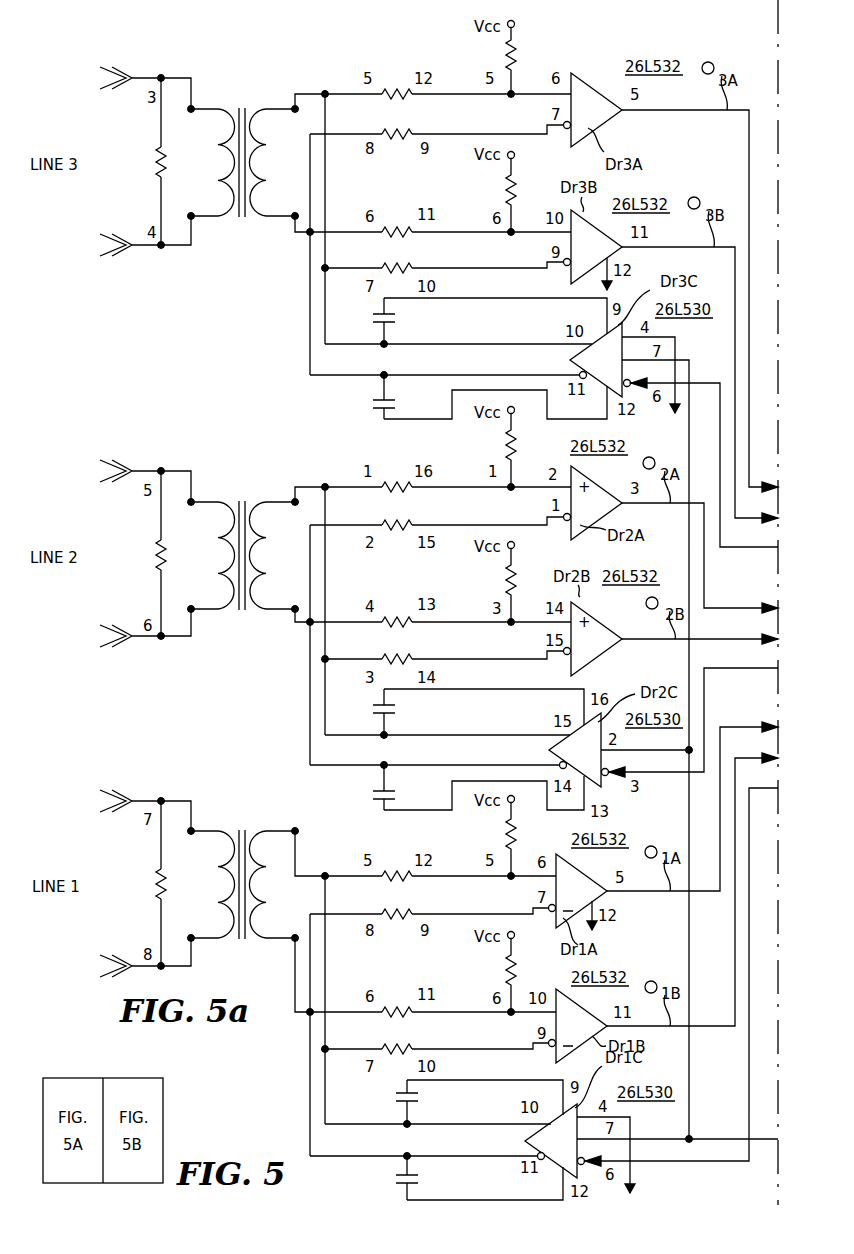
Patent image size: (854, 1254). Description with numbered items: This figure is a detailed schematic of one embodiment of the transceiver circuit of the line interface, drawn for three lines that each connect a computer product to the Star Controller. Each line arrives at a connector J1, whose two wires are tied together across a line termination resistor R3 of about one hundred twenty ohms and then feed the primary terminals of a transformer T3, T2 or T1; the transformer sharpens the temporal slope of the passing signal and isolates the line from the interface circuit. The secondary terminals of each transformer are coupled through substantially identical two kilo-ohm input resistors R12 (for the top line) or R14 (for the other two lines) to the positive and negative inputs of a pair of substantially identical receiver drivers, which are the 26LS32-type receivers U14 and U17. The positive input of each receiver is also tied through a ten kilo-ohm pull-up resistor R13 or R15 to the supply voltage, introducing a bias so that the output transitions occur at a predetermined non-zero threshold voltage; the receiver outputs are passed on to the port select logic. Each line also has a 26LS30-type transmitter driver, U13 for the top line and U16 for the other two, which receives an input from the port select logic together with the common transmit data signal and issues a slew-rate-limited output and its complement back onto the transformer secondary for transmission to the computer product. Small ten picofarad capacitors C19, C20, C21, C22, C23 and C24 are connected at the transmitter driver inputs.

The connector J1 is at (109, 523).
The 120 ohm line termination resistor R3 is at (133, 522).
The line 3 isolation transformer T3 is at (243, 149).
The transformer T2 is at (243, 543).
The transformer T1 is at (243, 872).
The 2k ohm input resistor R12 is at (394, 181).
The 10k ohm pull-up resistor R13 is at (505, 127).
The 2k ohm input resistor R14 is at (394, 768).
The 10k ohm pull-up resistor R15 is at (464, 710).
The 10 pF capacitor C19 is at (386, 321).
The 10 pF capacitor C20 is at (386, 397).
The 10 pF capacitor C21 is at (386, 712).
The 10 pF capacitor C22 is at (386, 787).
The 10 pF capacitor C23 is at (409, 1102).
The 10 pF capacitor C24 is at (409, 1178).
The 26LS30 line driver U13 is at (600, 360).
The 26LS32 line receiver U14 is at (593, 178).
The 26LS30 line driver U16 is at (567, 945).
The 26LS32 line receiver U17 is at (586, 764).